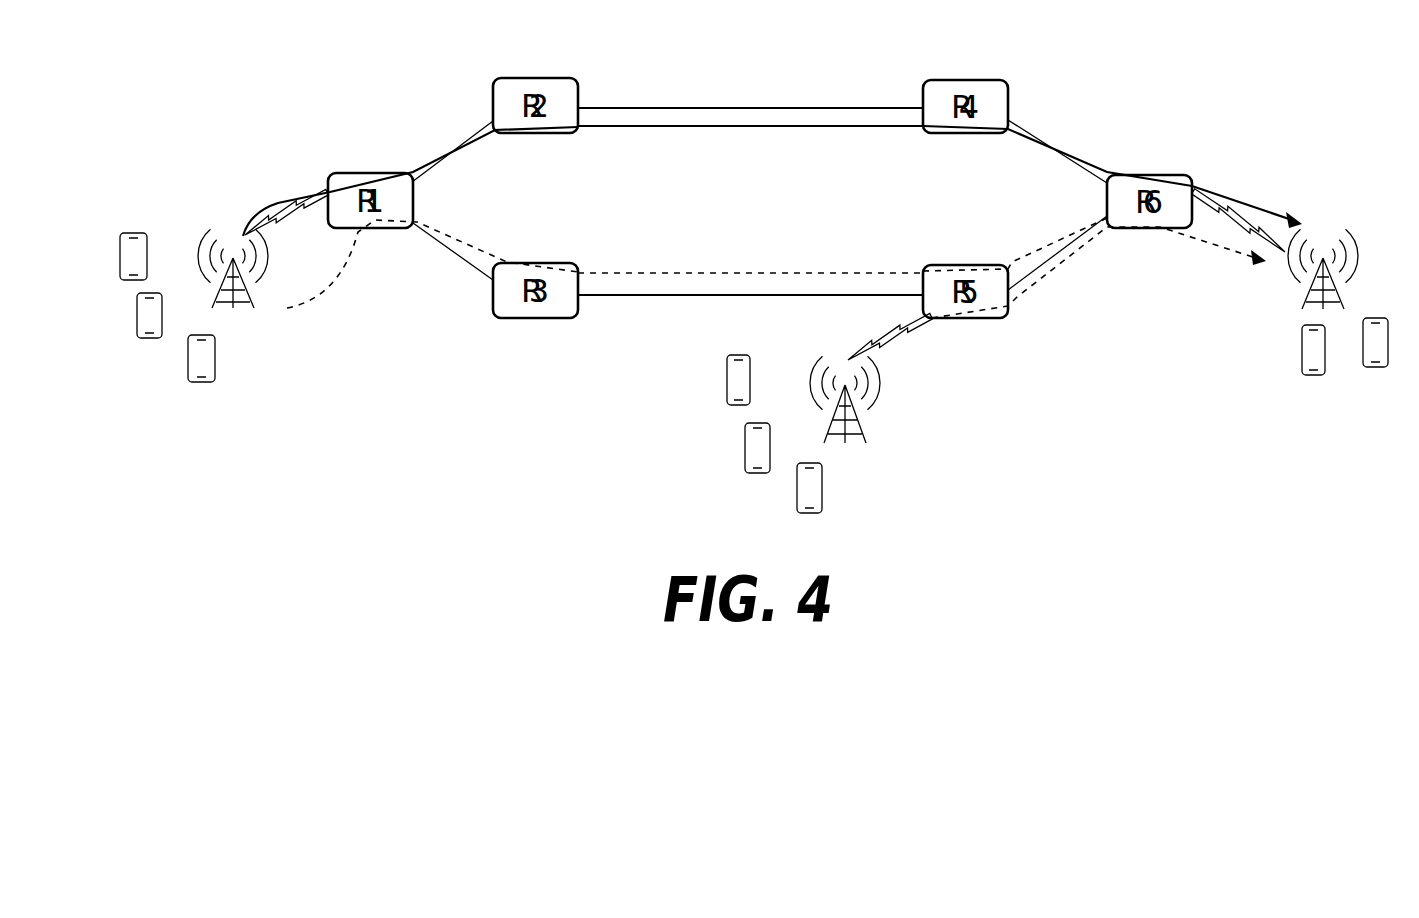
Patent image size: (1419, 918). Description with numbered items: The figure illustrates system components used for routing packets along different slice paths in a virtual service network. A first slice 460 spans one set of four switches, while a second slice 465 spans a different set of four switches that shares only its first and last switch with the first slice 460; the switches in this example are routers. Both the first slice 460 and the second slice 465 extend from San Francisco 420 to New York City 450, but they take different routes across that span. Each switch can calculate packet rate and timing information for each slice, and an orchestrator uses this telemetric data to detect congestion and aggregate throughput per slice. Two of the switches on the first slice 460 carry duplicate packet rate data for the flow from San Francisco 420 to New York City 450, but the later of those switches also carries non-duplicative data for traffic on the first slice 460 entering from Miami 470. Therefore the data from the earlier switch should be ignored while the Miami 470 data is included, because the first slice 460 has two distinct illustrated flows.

The San Francisco 420 is at (198, 192).
The New York City 450 is at (1350, 162).
The Miami 470 is at (892, 385).
The first slice 460 is at (820, 272).
The second slice 465 is at (823, 125).